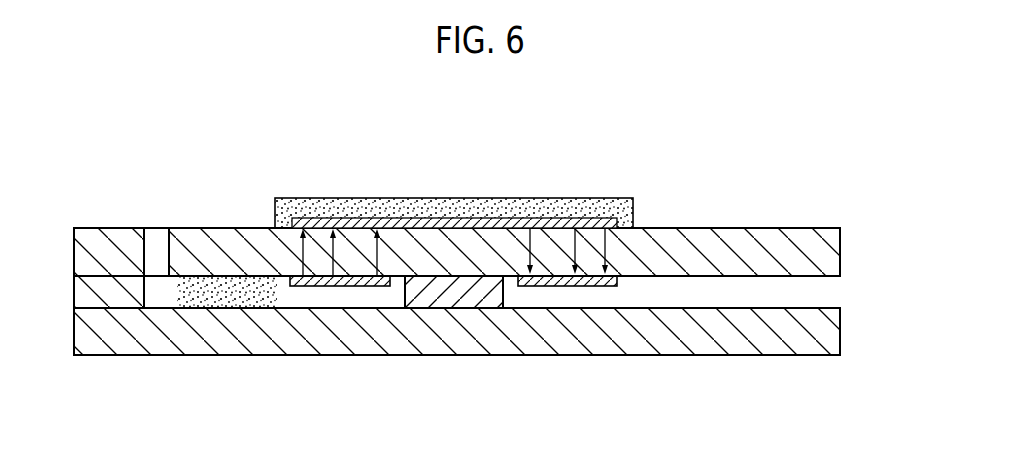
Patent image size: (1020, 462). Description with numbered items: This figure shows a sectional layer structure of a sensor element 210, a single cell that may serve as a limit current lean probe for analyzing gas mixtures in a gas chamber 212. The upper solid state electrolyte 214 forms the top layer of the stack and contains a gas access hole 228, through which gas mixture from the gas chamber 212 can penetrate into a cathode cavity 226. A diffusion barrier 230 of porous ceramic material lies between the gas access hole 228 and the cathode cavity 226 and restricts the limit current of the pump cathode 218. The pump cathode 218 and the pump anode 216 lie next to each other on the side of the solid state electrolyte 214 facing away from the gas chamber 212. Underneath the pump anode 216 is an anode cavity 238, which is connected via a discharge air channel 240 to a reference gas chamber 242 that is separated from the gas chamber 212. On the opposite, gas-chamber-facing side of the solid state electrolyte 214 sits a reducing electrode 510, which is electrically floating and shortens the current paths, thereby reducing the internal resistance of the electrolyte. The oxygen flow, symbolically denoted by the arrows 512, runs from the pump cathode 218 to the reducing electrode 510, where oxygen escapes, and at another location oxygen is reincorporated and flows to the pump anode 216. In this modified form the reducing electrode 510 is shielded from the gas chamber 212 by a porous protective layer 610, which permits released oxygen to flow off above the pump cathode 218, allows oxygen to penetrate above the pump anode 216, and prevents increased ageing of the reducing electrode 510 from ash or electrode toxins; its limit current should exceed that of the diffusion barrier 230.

The sensor element 210 is at (564, 187).
The gas chamber 212 is at (220, 155).
The solid state electrolyte 214 is at (255, 228).
The pump anode 216 is at (588, 289).
The pump cathode 218 is at (362, 289).
The cathode cavity 226 is at (325, 309).
The gas access hole 228 is at (157, 220).
The diffusion barrier 230 is at (223, 311).
The anode cavity 238 is at (550, 309).
The discharge air channel 240 is at (758, 295).
The reference gas chamber 242 is at (890, 300).
The reducing electrode 510 is at (468, 210).
The oxygen flow 512 is at (336, 249).
The porous protective layer 610 is at (386, 192).